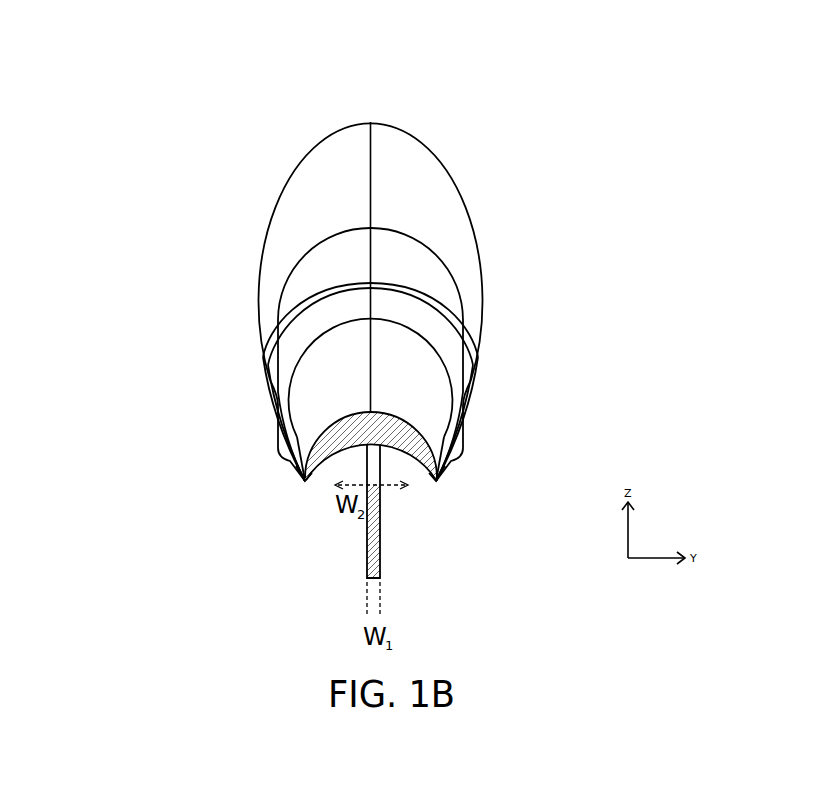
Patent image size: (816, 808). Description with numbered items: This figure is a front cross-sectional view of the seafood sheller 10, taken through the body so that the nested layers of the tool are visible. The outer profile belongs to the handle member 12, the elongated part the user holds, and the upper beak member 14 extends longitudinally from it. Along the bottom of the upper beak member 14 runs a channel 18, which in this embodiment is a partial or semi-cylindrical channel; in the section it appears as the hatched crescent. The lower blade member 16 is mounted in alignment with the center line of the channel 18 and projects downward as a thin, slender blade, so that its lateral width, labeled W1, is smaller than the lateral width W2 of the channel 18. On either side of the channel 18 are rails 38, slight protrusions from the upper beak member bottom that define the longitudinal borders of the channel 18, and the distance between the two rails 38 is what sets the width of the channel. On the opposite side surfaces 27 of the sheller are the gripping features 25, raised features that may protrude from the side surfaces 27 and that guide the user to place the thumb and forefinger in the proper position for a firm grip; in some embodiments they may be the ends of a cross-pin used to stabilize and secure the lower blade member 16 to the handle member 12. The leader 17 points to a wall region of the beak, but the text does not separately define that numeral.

The seafood sheller 10 is at (233, 110).
The handle member 12 is at (445, 168).
The upper beak member 14 is at (385, 352).
The lower blade member 16 is at (367, 540).
The inner wall 17 is at (302, 360).
The channel 18 is at (408, 472).
The gripping features 25 is at (465, 445).
The side surfaces 27 is at (463, 388).
The rails 38 is at (442, 478).